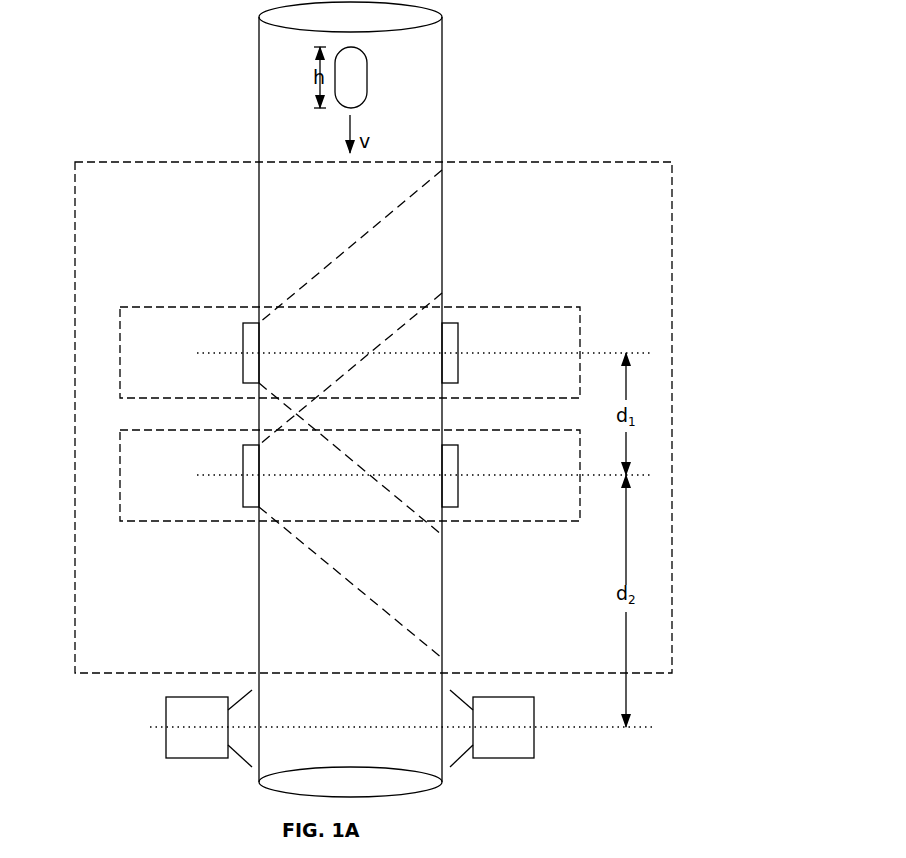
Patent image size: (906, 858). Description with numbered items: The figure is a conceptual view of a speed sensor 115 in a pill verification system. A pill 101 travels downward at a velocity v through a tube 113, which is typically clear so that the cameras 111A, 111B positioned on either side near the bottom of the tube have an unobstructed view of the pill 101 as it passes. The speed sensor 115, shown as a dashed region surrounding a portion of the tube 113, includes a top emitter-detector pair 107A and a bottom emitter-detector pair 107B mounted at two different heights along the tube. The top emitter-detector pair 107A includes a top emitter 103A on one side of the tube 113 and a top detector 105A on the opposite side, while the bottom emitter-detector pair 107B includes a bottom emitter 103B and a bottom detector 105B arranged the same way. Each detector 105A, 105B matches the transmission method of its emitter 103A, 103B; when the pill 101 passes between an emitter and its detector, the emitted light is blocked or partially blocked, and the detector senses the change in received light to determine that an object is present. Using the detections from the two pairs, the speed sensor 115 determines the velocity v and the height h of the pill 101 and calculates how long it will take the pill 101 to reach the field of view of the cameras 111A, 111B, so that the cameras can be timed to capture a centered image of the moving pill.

The pill 101 is at (367, 77).
The tube 113 is at (442, 93).
The speed sensor 115 is at (672, 230).
The top emitter-detector pair 107A is at (228, 307).
The bottom emitter-detector pair 107B is at (228, 522).
The top emitter 103A is at (243, 340).
The top detector 105A is at (458, 338).
The bottom emitter 103B is at (243, 460).
The bottom detector 105B is at (458, 460).
The camera 111A is at (166, 712).
The camera 111B is at (534, 750).